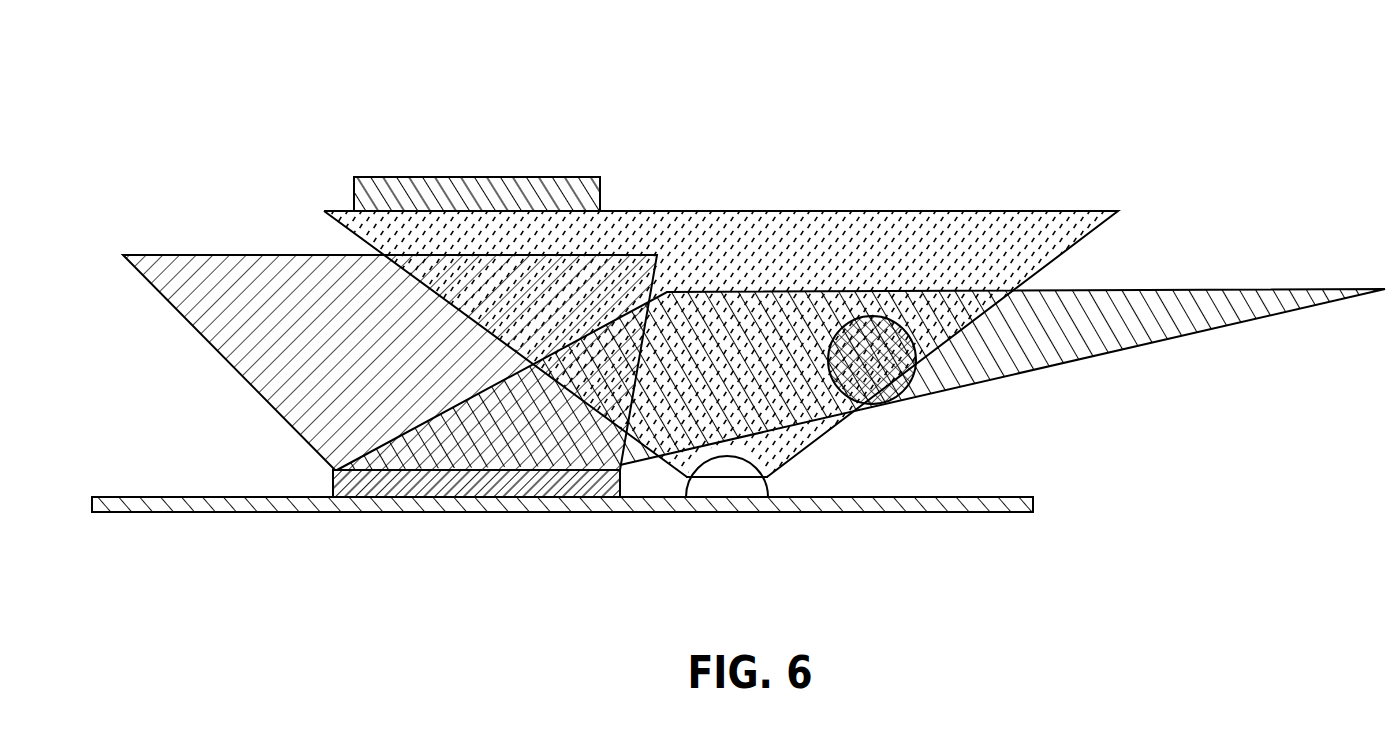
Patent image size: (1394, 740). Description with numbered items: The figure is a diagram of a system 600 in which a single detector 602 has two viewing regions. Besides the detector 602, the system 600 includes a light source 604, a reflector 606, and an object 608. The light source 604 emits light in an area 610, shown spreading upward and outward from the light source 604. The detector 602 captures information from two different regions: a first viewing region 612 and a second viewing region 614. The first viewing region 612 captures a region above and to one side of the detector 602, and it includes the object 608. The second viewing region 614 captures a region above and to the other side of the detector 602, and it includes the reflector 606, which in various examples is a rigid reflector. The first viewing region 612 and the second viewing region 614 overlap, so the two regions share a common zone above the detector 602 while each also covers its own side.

The system 600 is at (832, 49).
The detector 602 is at (401, 495).
The light source 604 is at (705, 487).
The reflector 606 is at (875, 387).
The object 608 is at (522, 187).
The area 610 is at (883, 222).
The first viewing region 612 is at (245, 362).
The second viewing region 614 is at (1127, 347).